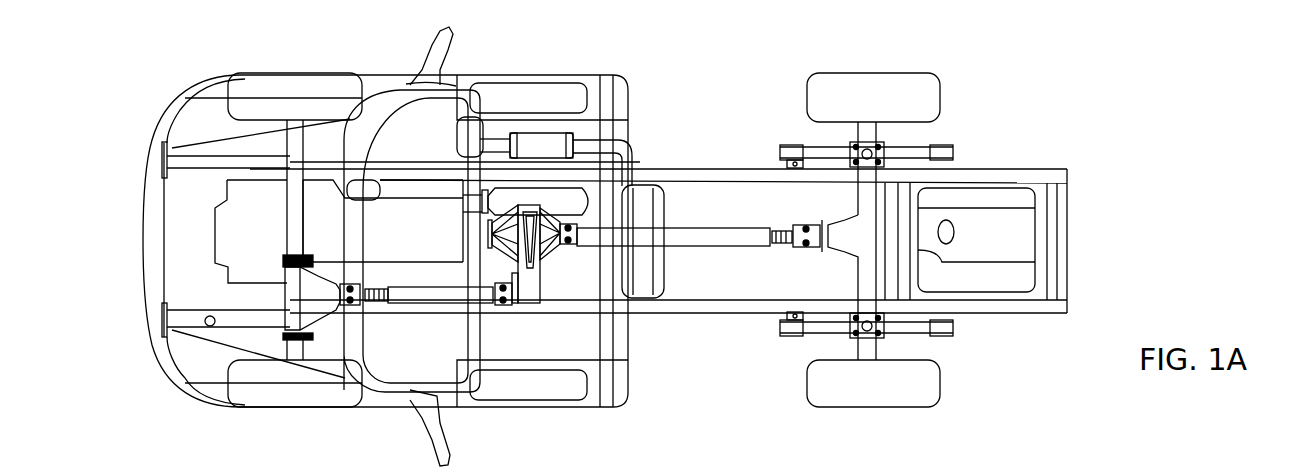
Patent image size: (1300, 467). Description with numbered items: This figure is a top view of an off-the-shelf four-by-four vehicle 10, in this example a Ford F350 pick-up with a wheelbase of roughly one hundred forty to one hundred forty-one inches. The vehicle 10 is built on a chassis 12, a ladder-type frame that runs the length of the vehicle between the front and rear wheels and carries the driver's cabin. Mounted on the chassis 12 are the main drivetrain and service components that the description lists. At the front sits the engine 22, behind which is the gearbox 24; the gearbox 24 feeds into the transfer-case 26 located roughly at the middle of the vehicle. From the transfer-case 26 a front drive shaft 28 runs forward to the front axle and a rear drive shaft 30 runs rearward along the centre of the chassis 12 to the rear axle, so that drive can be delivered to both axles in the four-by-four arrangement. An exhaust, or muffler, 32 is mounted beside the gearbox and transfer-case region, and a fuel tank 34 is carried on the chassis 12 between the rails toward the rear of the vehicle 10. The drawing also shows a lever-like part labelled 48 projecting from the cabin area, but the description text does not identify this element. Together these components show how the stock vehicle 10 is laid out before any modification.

The 4×4 vehicle 10 is at (1093, 64).
The chassis 12 is at (749, 328).
The engine 22 is at (248, 246).
The gearbox 24 is at (413, 237).
The transfer-case 26 is at (536, 225).
The front drive shaft 28 is at (424, 297).
The rear drive shaft 30 is at (713, 233).
The exhaust (muffler) 32 is at (540, 148).
The fuel tank 34 is at (983, 233).
The lever 48 is at (504, 466).